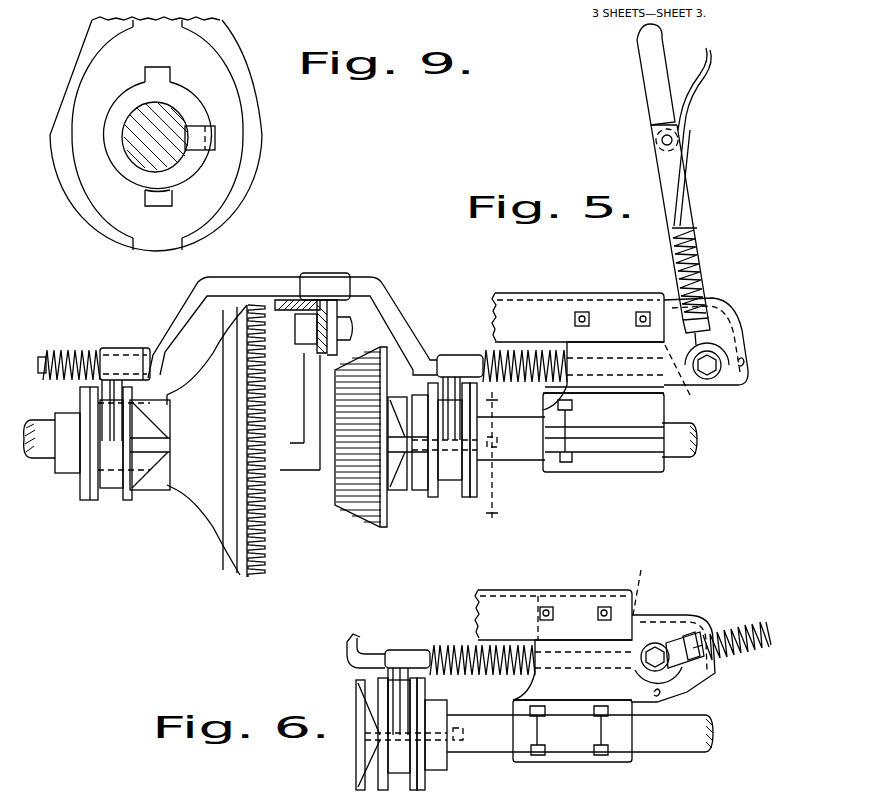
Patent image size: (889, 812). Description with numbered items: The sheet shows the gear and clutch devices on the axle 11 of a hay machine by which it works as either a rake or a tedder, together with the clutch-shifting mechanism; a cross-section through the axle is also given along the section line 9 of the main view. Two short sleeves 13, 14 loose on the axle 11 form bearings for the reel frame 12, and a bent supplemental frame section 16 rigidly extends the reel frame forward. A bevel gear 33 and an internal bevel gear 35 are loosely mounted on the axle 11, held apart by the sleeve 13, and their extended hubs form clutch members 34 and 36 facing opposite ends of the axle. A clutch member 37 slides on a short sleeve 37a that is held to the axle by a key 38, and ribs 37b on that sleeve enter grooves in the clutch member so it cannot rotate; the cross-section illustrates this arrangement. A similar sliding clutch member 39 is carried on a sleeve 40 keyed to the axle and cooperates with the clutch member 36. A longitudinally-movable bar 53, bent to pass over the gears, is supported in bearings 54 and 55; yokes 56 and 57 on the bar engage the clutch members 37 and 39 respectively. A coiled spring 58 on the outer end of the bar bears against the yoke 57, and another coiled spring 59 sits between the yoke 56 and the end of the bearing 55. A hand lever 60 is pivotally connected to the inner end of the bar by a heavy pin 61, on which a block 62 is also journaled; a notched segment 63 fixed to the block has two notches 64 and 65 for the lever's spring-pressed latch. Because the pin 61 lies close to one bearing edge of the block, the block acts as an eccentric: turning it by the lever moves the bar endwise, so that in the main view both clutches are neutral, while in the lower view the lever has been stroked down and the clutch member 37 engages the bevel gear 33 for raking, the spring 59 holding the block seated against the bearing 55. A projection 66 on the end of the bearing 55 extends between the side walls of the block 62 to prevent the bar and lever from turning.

In FIG. 5, the section line 9— 9 is at (492, 456).
In FIG. 9, the axle 11 is at (138, 115).
In FIG. 5, the axle 11 is at (38, 462).
In FIG. 6, the axle 11 is at (502, 742).
In FIG. 5, the reel frame 12 is at (578, 317).
In FIG. 6, the reel frame 12 is at (560, 593).
In FIG. 5, the sleeve 13 is at (282, 422).
In FIG. 5, the sleeve 14 is at (612, 466).
In FIG. 6, the sleeve 14 is at (580, 754).
In FIG. 5, the supplemental frame section 16 is at (322, 305).
In FIG. 5, the bevel gear 33 is at (368, 530).
In FIG. 5, the clutch member 34 is at (398, 480).
In FIG. 6, the clutch member 34 is at (357, 766).
In FIG. 5, the internal bevel gear 35 is at (255, 580).
In FIG. 5, the clutch member 36 is at (160, 480).
In FIG. 9, the clutch member 37 is at (228, 165).
In FIG. 5, the clutch member 37 is at (435, 492).
In FIG. 6, the clutch member 37 is at (417, 790).
In FIG. 9, the sleeve 37a is at (193, 110).
In FIG. 9, the ribs 37b is at (150, 67).
In FIG. 6, the ribs 37b is at (436, 704).
In FIG. 9, the key 38 is at (208, 137).
In FIG. 5, the key 38 is at (497, 437).
In FIG. 6, the key 38 is at (458, 728).
In FIG. 5, the sliding clutch member 39 is at (137, 482).
In FIG. 5, the sleeve 40 is at (68, 462).
In FIG. 5, the longitudinally-movable bar 53 is at (376, 285).
In FIG. 6, the longitudinally-movable bar 53 is at (366, 640).
In FIG. 5, the bearing 54 is at (313, 275).
In FIG. 5, the bearing 55 is at (618, 382).
In FIG. 6, the bearing 55 is at (563, 660).
In FIG. 5, the yoke 56 is at (452, 355).
In FIG. 6, the yoke 56 is at (407, 650).
In FIG. 5, the yoke 57 is at (110, 350).
In FIG. 5, the coiled spring 58 is at (60, 350).
In FIG. 5, the coiled spring 59 is at (533, 350).
In FIG. 6, the coiled spring 59 is at (450, 645).
In FIG. 5, the hand lever 60 is at (655, 165).
In FIG. 6, the hand lever 60 is at (742, 632).
In FIG. 5, the pin 61 is at (707, 380).
In FIG. 6, the pin 61 is at (653, 643).
In FIG. 6, the block 62 is at (690, 620).
In FIG. 5, the notched segment 63 is at (735, 386).
In FIG. 6, the notched segment 63 is at (678, 688).
In FIG. 5, the notch 64 is at (703, 330).
In FIG. 6, the notch 64 is at (702, 660).
In FIG. 5, the notch 65 is at (742, 360).
In FIG. 6, the notch 65 is at (657, 699).
In FIG. 5, the projection 66 is at (686, 382).
In FIG. 6, the projection 66 is at (645, 583).